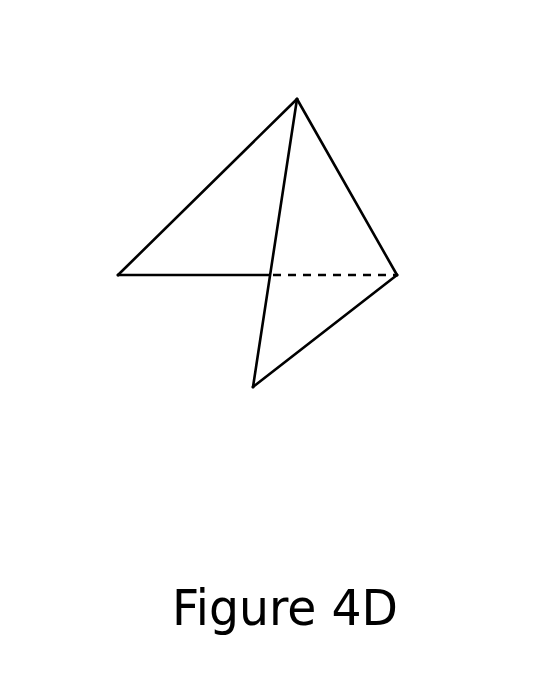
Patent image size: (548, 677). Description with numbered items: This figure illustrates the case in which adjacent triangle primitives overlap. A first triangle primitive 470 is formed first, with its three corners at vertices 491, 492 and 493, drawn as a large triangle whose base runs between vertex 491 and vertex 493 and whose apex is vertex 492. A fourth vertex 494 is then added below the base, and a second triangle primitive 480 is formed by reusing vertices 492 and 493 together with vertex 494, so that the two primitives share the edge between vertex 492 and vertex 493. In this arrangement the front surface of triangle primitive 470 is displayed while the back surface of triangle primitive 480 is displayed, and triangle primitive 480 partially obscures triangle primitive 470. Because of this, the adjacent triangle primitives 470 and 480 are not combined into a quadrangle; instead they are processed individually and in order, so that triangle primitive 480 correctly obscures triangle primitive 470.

The triangle primitive 470 is at (190, 238).
The second triangle primitive 480 is at (303, 257).
The vertex 491 is at (117, 277).
The vertex 492 is at (299, 98).
The vertex 493 is at (398, 278).
The fourth vertex 494 is at (256, 390).